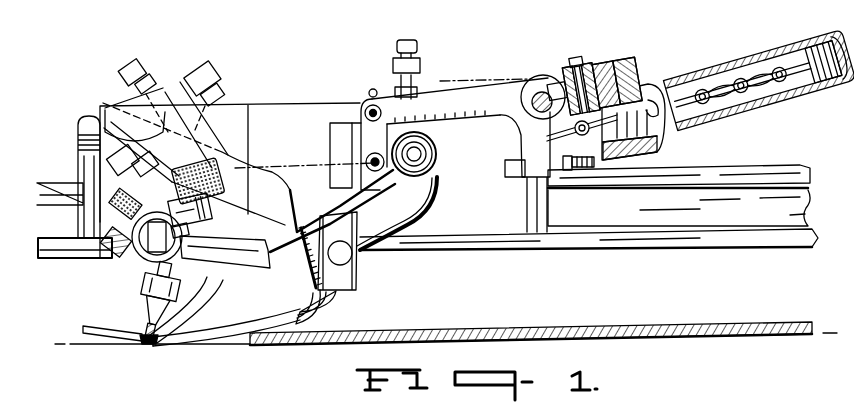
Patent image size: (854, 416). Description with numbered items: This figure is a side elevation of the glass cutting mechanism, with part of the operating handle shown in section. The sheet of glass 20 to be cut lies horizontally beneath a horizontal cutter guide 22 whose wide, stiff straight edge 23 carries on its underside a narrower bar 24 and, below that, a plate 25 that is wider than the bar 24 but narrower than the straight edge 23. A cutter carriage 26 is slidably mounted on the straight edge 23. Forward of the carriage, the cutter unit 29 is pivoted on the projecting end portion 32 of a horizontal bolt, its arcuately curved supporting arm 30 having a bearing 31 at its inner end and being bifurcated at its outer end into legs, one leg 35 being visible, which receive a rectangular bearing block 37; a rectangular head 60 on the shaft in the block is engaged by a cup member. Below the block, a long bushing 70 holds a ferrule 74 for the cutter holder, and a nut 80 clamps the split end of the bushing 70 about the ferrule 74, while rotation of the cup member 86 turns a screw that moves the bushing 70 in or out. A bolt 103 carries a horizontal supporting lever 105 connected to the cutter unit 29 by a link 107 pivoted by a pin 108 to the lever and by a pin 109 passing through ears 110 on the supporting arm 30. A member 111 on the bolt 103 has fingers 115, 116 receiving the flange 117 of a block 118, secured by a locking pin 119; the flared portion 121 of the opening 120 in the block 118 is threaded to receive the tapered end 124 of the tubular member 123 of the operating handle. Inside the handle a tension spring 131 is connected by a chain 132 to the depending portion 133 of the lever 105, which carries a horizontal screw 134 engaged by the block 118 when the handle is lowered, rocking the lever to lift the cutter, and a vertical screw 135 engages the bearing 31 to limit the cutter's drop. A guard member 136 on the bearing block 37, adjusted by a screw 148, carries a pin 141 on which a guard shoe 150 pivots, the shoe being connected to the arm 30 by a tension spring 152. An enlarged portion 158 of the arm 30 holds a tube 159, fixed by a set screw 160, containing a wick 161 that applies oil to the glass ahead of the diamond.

The sheet of glass 20 is at (587, 308).
The cutter guide 22 is at (776, 158).
The straight edge 23 is at (726, 158).
The bar 24 is at (800, 192).
The plate 25 is at (714, 242).
The cutter carriage 26 is at (276, 120).
The cutter unit 29 is at (224, 152).
The supporting arm 30 is at (315, 225).
The bearing 31 is at (434, 136).
The projecting end portion 32 is at (437, 166).
The leg 35 is at (236, 268).
The bearing block 37 is at (205, 209).
The head 60 is at (239, 272).
The bushing 70 is at (155, 271).
The ferrule 74 is at (143, 318).
The nut 80 is at (148, 283).
The cup member 86 is at (200, 165).
The bolt 103 is at (528, 84).
The supporting lever 105 is at (473, 104).
The link 107 is at (353, 134).
The pin 108 is at (366, 104).
The pin 109 is at (397, 213).
The ears 110 is at (366, 164).
The member 111 is at (554, 64).
The finger 115 is at (590, 64).
The finger 116 is at (612, 66).
The flange 117 is at (548, 84).
The block 118 is at (640, 71).
The locking pin 119 is at (581, 60).
The opening 120 is at (613, 165).
The flared portion 121 is at (630, 70).
The tubular member 123 is at (794, 53).
The tapered end 124 is at (642, 152).
The tension spring 131 is at (812, 84).
The chain 132 is at (727, 70).
The depending portion 133 is at (522, 150).
The screw 134 is at (577, 197).
The screw 135 is at (415, 80).
The guard member 136 is at (190, 344).
The pin 141 is at (143, 345).
The screw 148 is at (247, 222).
The guard shoe 150 is at (232, 344).
The tension spring 152 is at (300, 278).
The enlarged portion 158 is at (353, 281).
The tube 159 is at (305, 159).
The set screw 160 is at (356, 262).
The wick 161 is at (340, 302).